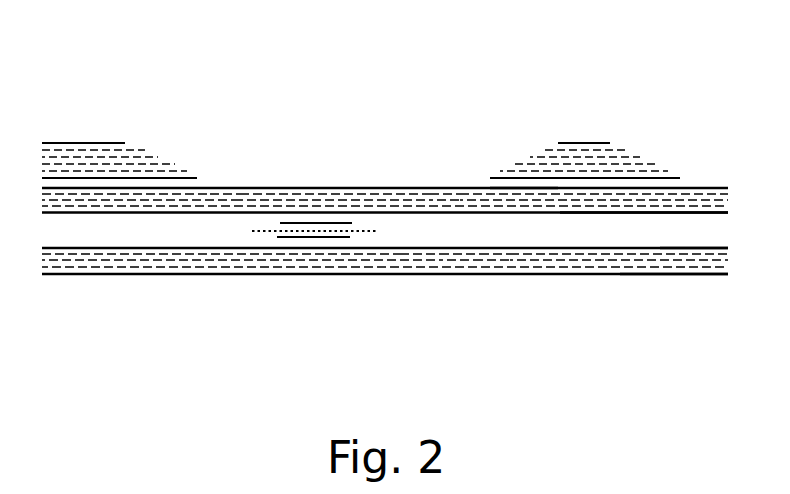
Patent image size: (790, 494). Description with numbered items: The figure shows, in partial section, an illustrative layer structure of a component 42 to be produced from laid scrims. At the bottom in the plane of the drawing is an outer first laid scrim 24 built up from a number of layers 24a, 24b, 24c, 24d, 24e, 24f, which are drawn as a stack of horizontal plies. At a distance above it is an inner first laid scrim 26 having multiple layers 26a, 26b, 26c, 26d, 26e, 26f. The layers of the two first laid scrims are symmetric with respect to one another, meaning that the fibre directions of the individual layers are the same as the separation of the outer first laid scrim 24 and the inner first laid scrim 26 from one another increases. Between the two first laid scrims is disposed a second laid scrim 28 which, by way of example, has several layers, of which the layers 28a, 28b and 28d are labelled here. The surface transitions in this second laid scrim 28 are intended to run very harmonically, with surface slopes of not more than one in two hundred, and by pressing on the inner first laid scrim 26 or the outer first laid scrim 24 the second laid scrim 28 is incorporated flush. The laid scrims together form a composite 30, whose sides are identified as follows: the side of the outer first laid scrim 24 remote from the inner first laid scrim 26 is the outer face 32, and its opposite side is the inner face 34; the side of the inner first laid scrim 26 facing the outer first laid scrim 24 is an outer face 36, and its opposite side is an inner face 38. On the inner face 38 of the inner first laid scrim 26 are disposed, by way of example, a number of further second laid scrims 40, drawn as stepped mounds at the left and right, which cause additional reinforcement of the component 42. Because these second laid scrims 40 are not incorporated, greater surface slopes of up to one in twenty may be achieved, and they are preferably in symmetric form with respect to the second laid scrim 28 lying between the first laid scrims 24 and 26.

The outer first laid scrim 24 is at (288, 262).
The layer of outer first laid scrim 24a is at (386, 283).
The layer of outer first laid scrim 24b is at (426, 283).
The layer of outer first laid scrim 24c is at (462, 278).
The layer of outer first laid scrim 24d is at (488, 274).
The layer of outer first laid scrim 24e is at (517, 269).
The layer of outer first laid scrim 24f is at (543, 263).
The inner first laid scrim 26 is at (300, 215).
The layer of inner first laid scrim 26a is at (483, 173).
The layer of inner first laid scrim 26b is at (461, 182).
The layer of inner first laid scrim 26c is at (430, 182).
The layer of inner first laid scrim 26d is at (254, 190).
The layer of inner first laid scrim 26e is at (232, 200).
The layer of inner first laid scrim 26f is at (205, 200).
The second laid scrim 28 is at (334, 220).
The layer of second laid scrim 28a is at (350, 233).
The layer of second laid scrim 28b is at (347, 229).
The layer of second laid scrim 28d is at (320, 219).
The composite 30 is at (535, 120).
The outer face 32 is at (665, 284).
The inner face 34 is at (673, 238).
The outer face 36 is at (603, 222).
The inner face 38 is at (562, 177).
The further second laid scrim 40 is at (80, 155).
The component 42 is at (367, 80).